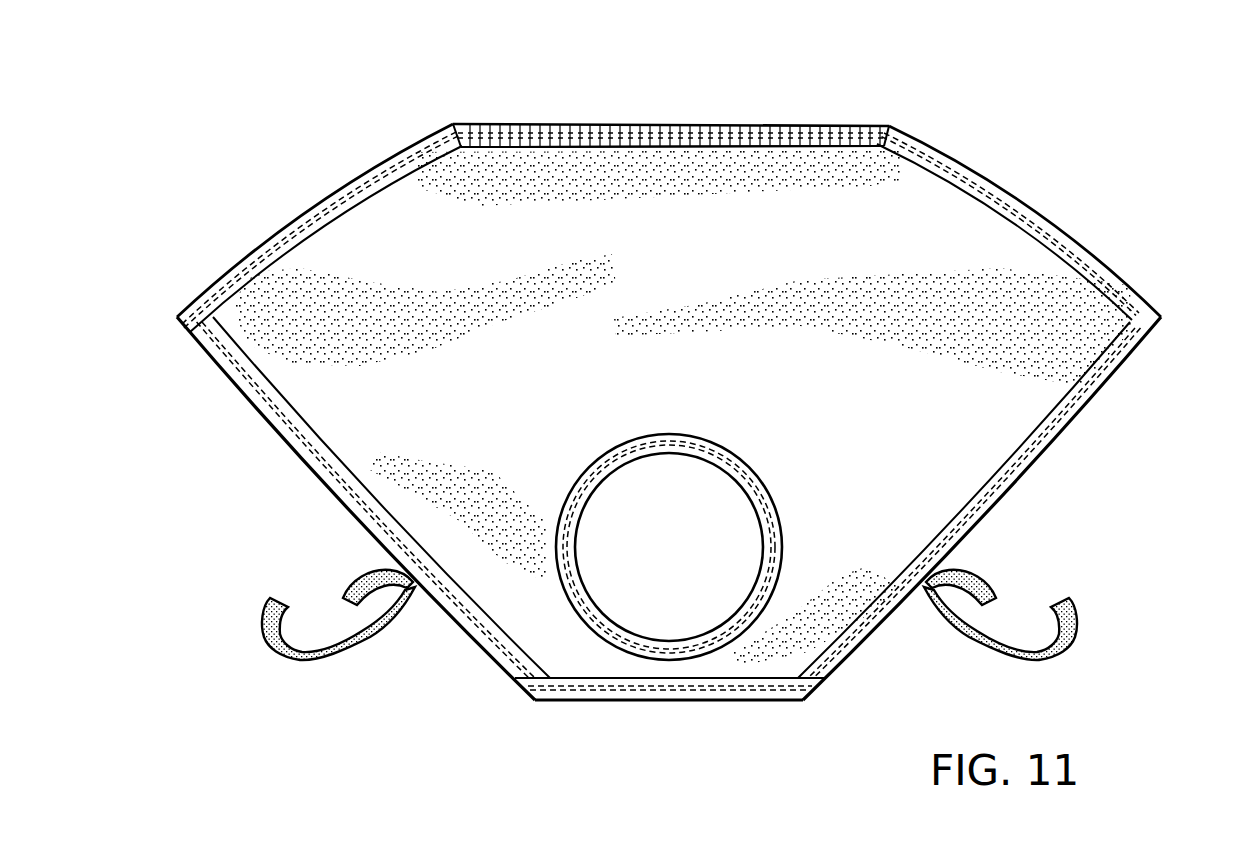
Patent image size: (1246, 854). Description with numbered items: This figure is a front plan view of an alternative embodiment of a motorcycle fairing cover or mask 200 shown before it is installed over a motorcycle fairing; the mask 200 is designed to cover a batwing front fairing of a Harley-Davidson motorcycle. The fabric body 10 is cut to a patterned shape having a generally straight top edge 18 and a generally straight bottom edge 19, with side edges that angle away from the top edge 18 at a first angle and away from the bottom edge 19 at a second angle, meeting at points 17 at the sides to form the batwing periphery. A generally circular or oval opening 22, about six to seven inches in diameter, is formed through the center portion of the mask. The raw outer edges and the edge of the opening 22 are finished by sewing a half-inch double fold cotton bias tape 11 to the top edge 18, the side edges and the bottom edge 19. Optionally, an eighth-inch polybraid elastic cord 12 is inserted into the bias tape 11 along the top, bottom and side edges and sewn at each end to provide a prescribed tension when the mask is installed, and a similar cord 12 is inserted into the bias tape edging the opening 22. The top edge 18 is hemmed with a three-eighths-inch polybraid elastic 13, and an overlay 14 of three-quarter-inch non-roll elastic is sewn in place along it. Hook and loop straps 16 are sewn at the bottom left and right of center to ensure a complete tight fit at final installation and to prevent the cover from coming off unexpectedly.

The motorcycle fairing cover or mask 200 is at (299, 170).
The filter body panel 10 is at (1003, 247).
The double fold cotton bias tape 11 is at (792, 145).
The polybraid elastic cord 12 is at (358, 466).
The polybraid elastic 13 is at (723, 132).
The overlay 14 is at (560, 125).
The hook and loop straps 16 is at (330, 660).
The points 17 is at (1163, 318).
The top edge 18 is at (657, 123).
The bottom edge 19 is at (673, 702).
The circular opening 22 is at (657, 549).